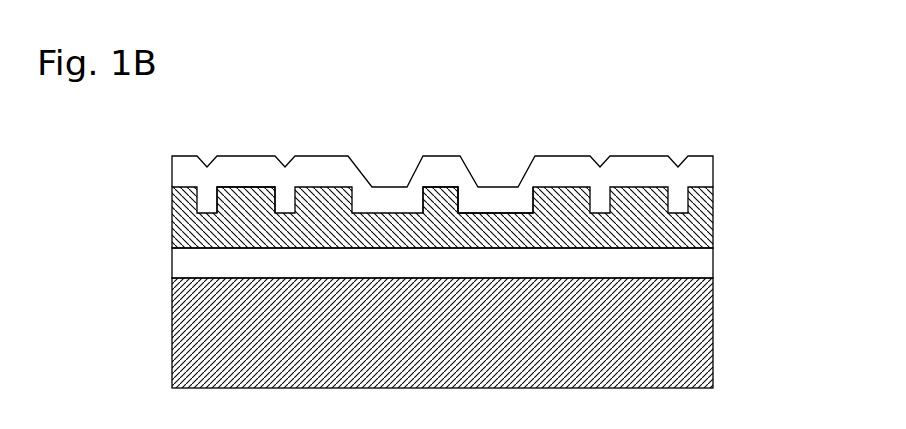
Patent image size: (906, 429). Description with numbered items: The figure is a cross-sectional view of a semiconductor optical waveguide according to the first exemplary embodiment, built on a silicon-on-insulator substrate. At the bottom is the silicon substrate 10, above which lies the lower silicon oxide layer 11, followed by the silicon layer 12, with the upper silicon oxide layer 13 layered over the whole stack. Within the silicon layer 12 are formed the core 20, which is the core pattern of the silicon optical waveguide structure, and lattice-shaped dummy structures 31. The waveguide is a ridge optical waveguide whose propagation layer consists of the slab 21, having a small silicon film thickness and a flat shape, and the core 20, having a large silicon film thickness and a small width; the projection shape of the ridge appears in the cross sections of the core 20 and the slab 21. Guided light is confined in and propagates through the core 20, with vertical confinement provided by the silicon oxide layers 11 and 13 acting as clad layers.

The silicon substrate 10 is at (702, 315).
The lower silicon oxide layer 11 is at (702, 265).
The silicon layer 12 is at (702, 223).
The upper silicon oxide layer 13 is at (702, 172).
The core 20 is at (442, 198).
The slab 21 is at (498, 208).
The dummy structures 31 is at (243, 198).